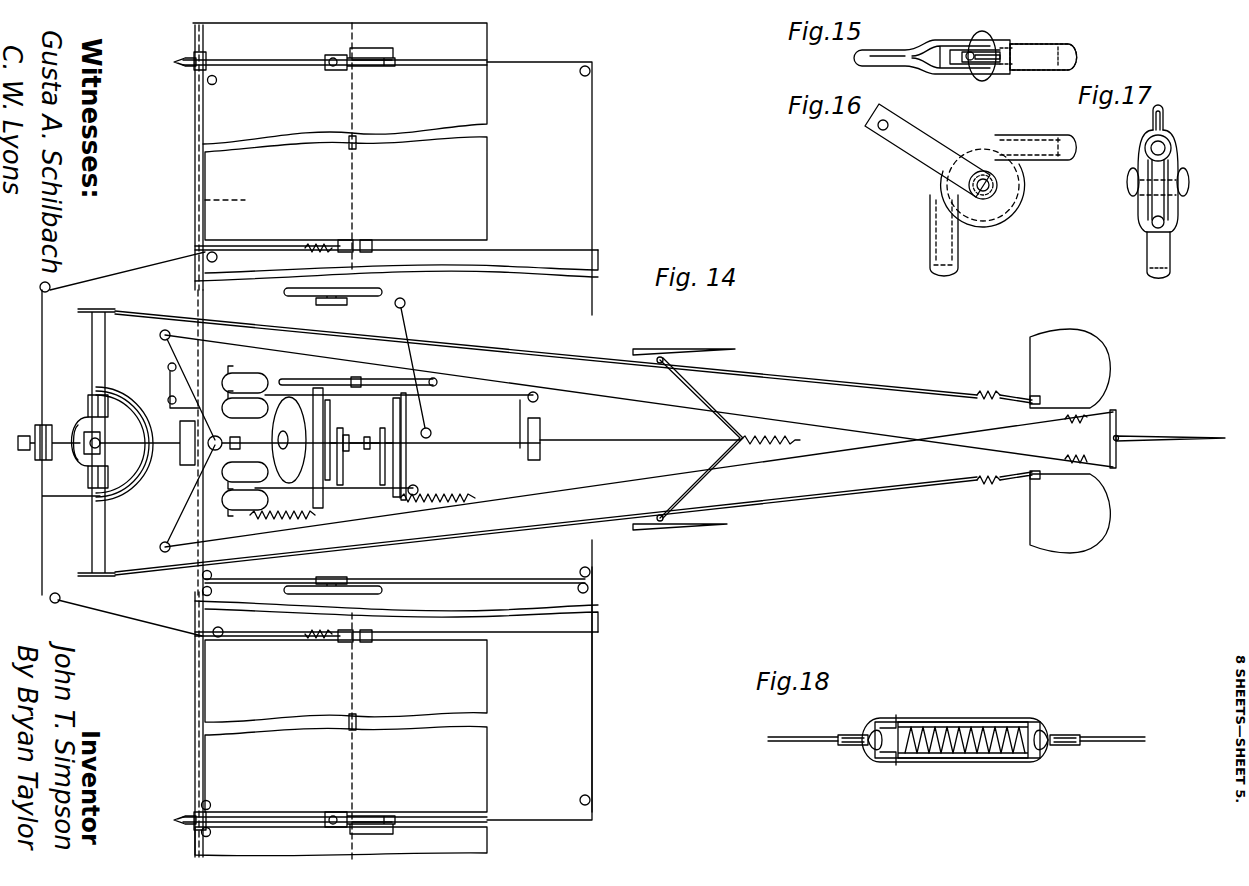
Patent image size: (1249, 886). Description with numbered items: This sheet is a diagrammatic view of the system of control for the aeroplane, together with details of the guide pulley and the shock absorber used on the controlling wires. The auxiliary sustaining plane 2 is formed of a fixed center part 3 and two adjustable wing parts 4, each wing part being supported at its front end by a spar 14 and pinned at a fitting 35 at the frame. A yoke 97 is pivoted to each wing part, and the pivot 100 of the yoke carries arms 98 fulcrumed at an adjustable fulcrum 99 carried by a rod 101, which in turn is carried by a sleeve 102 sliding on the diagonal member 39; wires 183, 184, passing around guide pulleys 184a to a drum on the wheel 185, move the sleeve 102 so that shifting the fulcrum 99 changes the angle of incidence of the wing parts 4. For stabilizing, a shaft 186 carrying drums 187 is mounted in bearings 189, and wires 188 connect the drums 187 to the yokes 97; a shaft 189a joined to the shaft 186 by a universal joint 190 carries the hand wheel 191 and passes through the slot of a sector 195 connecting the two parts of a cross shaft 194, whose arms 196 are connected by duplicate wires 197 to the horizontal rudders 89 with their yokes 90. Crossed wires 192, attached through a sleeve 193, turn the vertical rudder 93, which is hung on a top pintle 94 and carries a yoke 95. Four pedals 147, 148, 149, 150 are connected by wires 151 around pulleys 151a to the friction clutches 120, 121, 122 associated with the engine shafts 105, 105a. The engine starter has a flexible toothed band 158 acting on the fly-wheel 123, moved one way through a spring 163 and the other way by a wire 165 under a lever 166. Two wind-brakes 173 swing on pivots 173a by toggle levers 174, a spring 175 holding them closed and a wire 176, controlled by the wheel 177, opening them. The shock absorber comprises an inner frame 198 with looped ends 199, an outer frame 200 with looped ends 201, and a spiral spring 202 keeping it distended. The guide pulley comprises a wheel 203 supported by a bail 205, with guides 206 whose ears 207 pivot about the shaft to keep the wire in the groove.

In FIG. 14, the auxiliary sustaining plane 2 is at (320, 441).
In FIG. 14, the fixed center part 3 is at (479, 311).
In FIG. 14, the adjustable wing parts 4 is at (434, 208).
In FIG. 14, the spar 14 is at (266, 205).
In FIG. 14, the pin 35 is at (178, 67).
In FIG. 14, the diagonal member 39 is at (290, 62).
In FIG. 14, the horizontal rudders 89 is at (1070, 441).
In FIG. 14, the yokes 90 is at (1042, 404).
In FIG. 14, the rear vertical rudder 93 is at (1170, 429).
In FIG. 14, the top pintle 94 is at (1108, 440).
In FIG. 14, the yoke 95 is at (1118, 452).
In FIG. 14, the yoke 97 is at (392, 252).
In FIG. 14, the arms 98 is at (380, 68).
In FIG. 14, the fulcrum 99 is at (398, 66).
In FIG. 14, the pivot 100 is at (381, 266).
In FIG. 14, the rod 101 is at (370, 50).
In FIG. 14, the sleeve 102 is at (331, 75).
In FIG. 14, the engine shaft 105 is at (343, 470).
In FIG. 14, the engine shaft 105a is at (378, 440).
In FIG. 14, the friction clutch 120 is at (350, 477).
In FIG. 14, the friction clutch 121 is at (540, 425).
In FIG. 14, the friction clutch 122 is at (188, 467).
In FIG. 14, the fly-wheel 123 is at (406, 474).
In FIG. 14, the pedal 147 is at (245, 503).
In FIG. 14, the pedal 148 is at (245, 475).
In FIG. 14, the pedal 149 is at (245, 404).
In FIG. 14, the pedal 150 is at (245, 379).
In FIG. 14, the wires 151 is at (238, 372).
In FIG. 14, the pulleys 151a is at (168, 372).
In FIG. 14, the flexible band 158 is at (327, 416).
In FIG. 14, the spring 163 is at (290, 534).
In FIG. 14, the wire 165 is at (302, 380).
In FIG. 14, the lever 166 is at (358, 374).
In FIG. 14, the wind-brakes 173 is at (710, 352).
In FIG. 14, the pivots 173a is at (658, 551).
In FIG. 14, the toggle levers 174 is at (722, 392).
In FIG. 14, the spring 175 is at (774, 434).
In FIG. 14, the wire 176 is at (640, 444).
In FIG. 14, the wheel 177 is at (372, 300).
In FIG. 14, the wire 183 is at (495, 70).
In FIG. 14, the wire 184 is at (250, 72).
In FIG. 14, the guide pulleys 184a is at (207, 84).
In FIG. 14, the wheel 185 is at (366, 590).
In FIG. 14, the shaft 186 is at (64, 460).
In FIG. 14, the drums 187 is at (40, 460).
In FIG. 14, the wires 188 is at (122, 266).
In FIG. 14, the bearings 189 is at (86, 402).
In FIG. 14, the shaft 189a is at (232, 446).
In FIG. 14, the universal joint 190 is at (105, 438).
In FIG. 14, the hand wheel 191 is at (282, 400).
In FIG. 14, the wires 192 is at (826, 458).
In FIG. 14, the sleeve 193 is at (222, 448).
In FIG. 14, the cross shaft 194 is at (105, 535).
In FIG. 14, the slotted sector 195 is at (135, 485).
In FIG. 14, the arms 196 is at (110, 312).
In FIG. 14, the wires 197 is at (490, 344).
In FIG. 18, the inner frame 198 is at (980, 728).
In FIG. 18, the looped ends 199 is at (1040, 730).
In FIG. 18, the outer frame 200 is at (988, 762).
In FIG. 15, the looped ends 201 is at (980, 84).
In FIG. 16, the looped ends 201 is at (995, 182).
In FIG. 17, the looped ends 201 is at (1182, 176).
In FIG. 18, the looped ends 201 is at (902, 760).
In FIG. 18, the spiral spring 202 is at (922, 730).
In FIG. 15, the wheel 203 is at (1008, 68).
In FIG. 16, the wheel 203 is at (1015, 212).
In FIG. 17, the wheel 203 is at (1172, 205).
In FIG. 15, the bail 205 is at (945, 32).
In FIG. 16, the bail 205 is at (936, 128).
In FIG. 17, the bail 205 is at (1172, 135).
In FIG. 15, the guides 206 is at (1050, 46).
In FIG. 16, the guides 206 is at (1050, 142).
In FIG. 17, the guides 206 is at (1172, 146).
In FIG. 15, the ears 207 is at (1000, 78).
In FIG. 16, the ears 207 is at (990, 138).